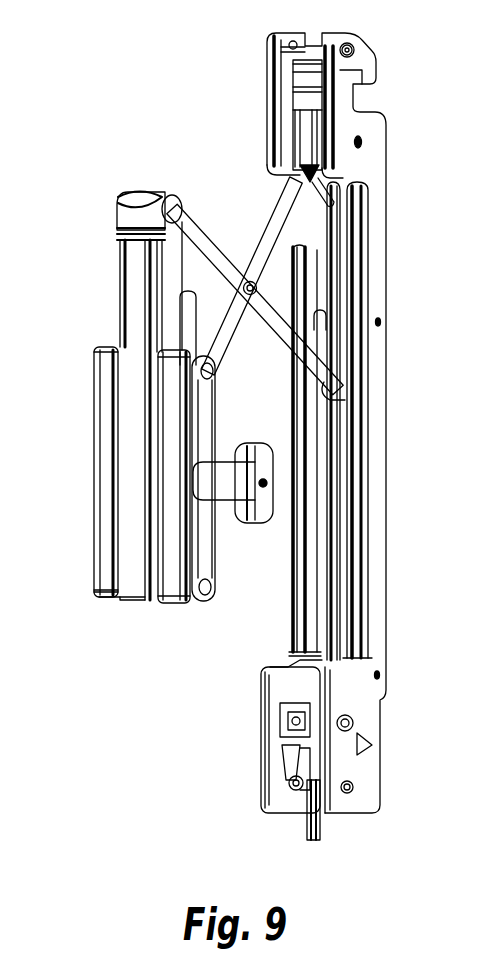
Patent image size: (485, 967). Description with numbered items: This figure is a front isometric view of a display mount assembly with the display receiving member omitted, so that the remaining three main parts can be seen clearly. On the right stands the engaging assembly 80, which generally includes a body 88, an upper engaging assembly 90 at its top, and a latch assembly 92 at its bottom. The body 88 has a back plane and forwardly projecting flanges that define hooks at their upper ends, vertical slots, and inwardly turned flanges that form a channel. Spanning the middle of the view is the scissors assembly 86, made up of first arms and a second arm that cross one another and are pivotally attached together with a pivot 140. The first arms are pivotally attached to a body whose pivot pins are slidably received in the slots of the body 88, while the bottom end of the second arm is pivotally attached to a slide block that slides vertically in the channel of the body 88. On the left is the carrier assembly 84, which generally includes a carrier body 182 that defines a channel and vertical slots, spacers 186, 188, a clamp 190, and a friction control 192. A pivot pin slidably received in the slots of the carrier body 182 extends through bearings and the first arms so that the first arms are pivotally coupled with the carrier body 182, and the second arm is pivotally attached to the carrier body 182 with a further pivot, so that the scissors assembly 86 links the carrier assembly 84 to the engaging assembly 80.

The engaging assembly 80 is at (370, 152).
The carrier assembly 84 is at (110, 597).
The scissors assembly 86 is at (263, 213).
The body 88 is at (373, 253).
The upper engaging assembly 90 is at (360, 52).
The latch assembly 92 is at (260, 783).
The pivot 140 is at (305, 250).
The carrier body 182 is at (130, 292).
The spacer 186 is at (105, 455).
The spacer 188 is at (162, 572).
The clamp 190 is at (195, 547).
The friction control 192 is at (243, 457).